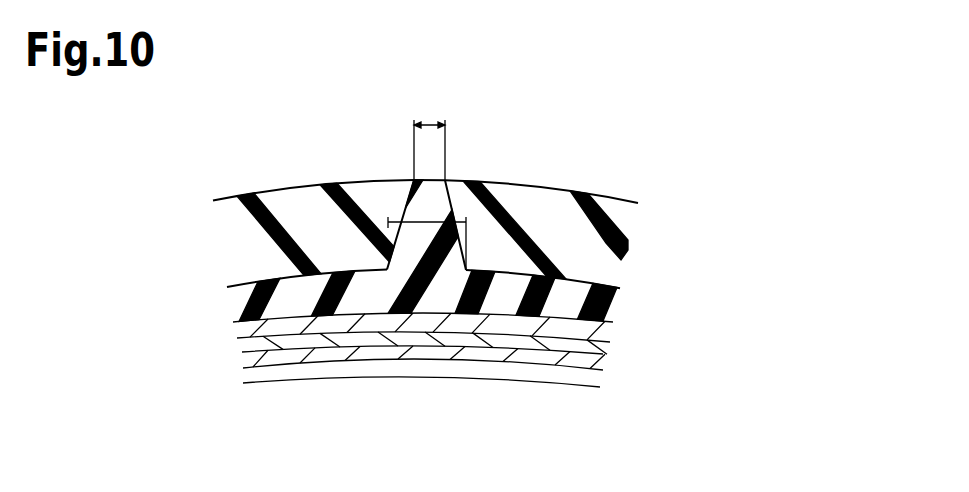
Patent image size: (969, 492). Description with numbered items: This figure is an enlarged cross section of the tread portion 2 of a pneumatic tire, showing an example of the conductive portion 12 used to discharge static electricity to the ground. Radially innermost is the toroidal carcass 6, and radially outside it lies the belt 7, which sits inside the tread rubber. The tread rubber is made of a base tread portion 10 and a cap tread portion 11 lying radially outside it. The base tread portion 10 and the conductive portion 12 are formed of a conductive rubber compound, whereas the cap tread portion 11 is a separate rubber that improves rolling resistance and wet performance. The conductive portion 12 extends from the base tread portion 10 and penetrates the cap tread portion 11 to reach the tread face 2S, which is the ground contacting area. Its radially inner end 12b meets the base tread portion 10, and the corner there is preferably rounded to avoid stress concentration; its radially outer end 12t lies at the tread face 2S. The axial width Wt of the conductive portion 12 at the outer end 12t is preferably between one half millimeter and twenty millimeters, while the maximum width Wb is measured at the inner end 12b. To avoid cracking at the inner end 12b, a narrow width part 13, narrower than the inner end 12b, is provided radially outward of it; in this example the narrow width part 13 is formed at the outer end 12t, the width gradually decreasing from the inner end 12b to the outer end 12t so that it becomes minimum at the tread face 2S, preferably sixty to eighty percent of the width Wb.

The tread portion 2 is at (593, 118).
The tread face 2S is at (588, 192).
The carcass 6 is at (478, 353).
The belt 7 is at (403, 323).
The base tread portion 10 is at (272, 298).
The cap tread portion 11 is at (283, 203).
The conductive portion 12 is at (404, 206).
The outer end 12t is at (442, 177).
The inner end 12b is at (467, 270).
The narrow width part 13 is at (412, 202).
The axial width of the conductive portion at the outer end Wt is at (430, 123).
The maximum width at the inner end Wb is at (423, 223).